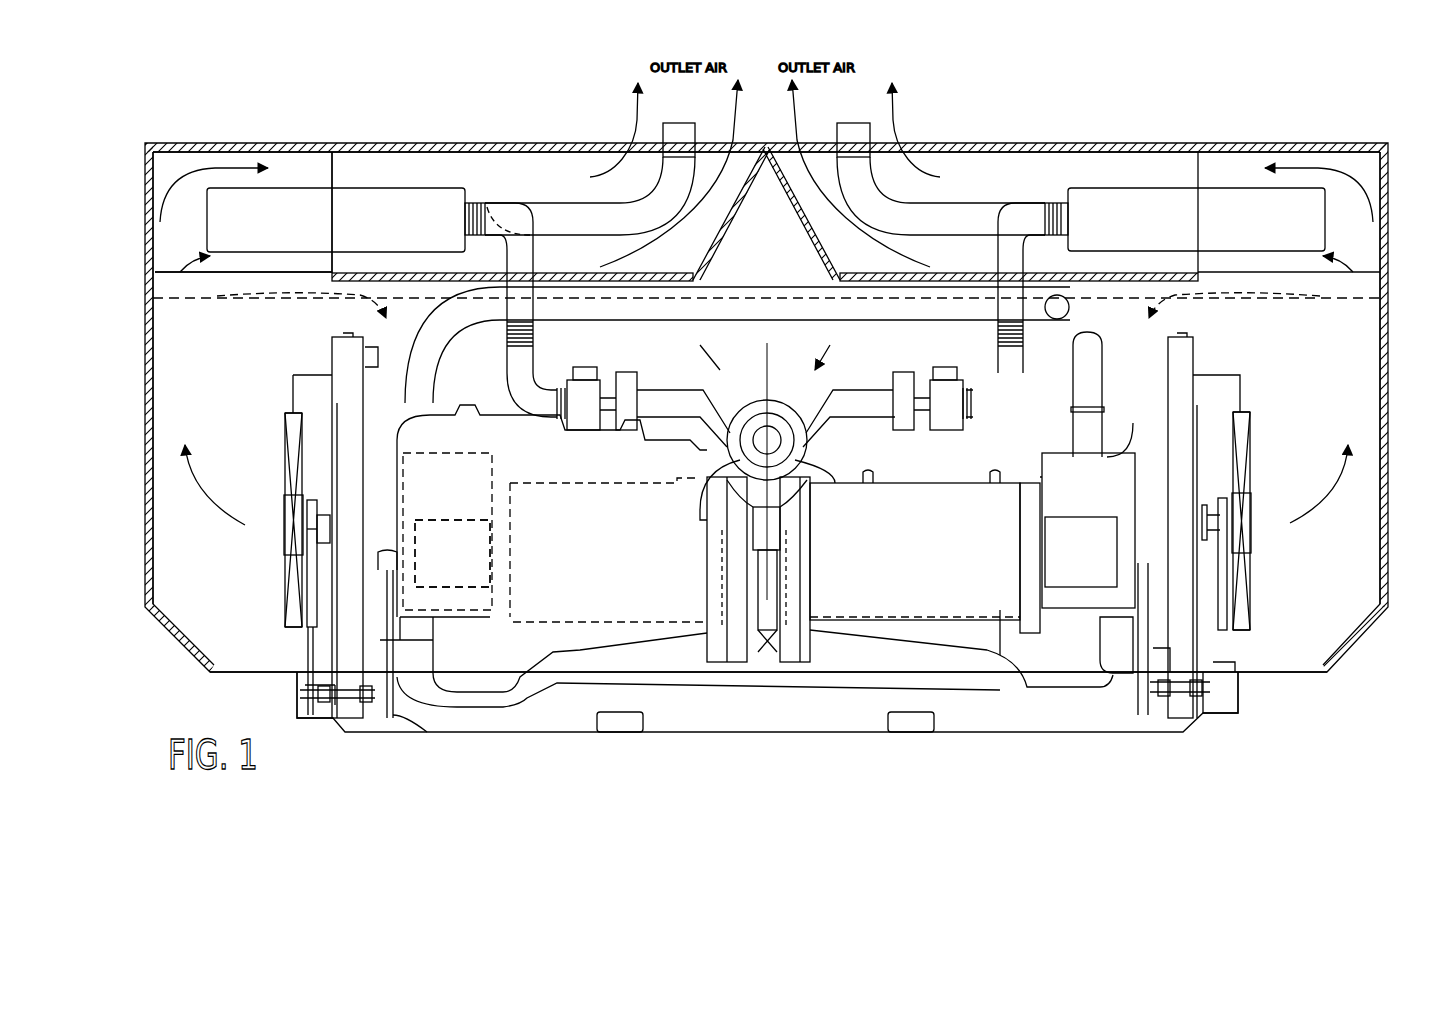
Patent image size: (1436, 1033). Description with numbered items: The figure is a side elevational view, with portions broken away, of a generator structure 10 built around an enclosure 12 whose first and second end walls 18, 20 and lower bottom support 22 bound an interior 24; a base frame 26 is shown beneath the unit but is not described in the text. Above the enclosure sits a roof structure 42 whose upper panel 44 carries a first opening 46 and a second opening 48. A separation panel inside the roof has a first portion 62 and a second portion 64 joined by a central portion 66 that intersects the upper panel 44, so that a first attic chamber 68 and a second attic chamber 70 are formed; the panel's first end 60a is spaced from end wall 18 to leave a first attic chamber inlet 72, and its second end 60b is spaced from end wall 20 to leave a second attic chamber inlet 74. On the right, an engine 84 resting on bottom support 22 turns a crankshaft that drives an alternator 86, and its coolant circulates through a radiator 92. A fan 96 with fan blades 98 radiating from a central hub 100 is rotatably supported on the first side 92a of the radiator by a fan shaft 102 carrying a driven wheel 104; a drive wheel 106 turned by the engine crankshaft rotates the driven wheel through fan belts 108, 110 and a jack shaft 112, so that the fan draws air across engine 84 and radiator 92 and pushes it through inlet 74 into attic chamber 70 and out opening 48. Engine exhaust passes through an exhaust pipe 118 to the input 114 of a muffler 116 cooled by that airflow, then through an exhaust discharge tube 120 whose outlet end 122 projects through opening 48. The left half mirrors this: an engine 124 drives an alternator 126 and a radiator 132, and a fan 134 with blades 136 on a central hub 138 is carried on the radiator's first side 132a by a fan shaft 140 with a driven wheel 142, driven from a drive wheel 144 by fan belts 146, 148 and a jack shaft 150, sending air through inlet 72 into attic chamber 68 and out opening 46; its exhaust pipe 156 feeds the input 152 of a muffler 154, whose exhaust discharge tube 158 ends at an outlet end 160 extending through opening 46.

The generator structure 10 is at (1288, 735).
The enclosure 12 is at (1410, 612).
The first end wall 18 is at (148, 400).
The second end wall 20 is at (1388, 415).
The lower bottom support 22 is at (1312, 678).
The interior 24 is at (420, 333).
The base frame 26 is at (702, 737).
The roof structure 42 is at (1212, 145).
The upper panel 44 is at (410, 143).
The first opening 46 is at (600, 142).
The second opening 48 is at (930, 142).
The first end of separation panel 60a is at (330, 252).
The second end of separation panel 60b is at (1190, 240).
The first portion of separation panel 62 is at (605, 285).
The second portion of separation panel 64 is at (1095, 288).
The central portion of separation panel 66 is at (805, 205).
The first attic chamber 68 is at (541, 188).
The second attic chamber 70 is at (1050, 185).
The first attic chamber inlet 72 is at (315, 272).
The second attic chamber inlet 74 is at (1203, 280).
The engine 84 is at (1123, 427).
The alternator 86 is at (620, 480).
The radiator 92 is at (1175, 372).
The first side of radiator 92a is at (1200, 402).
The fan 96 is at (1254, 608).
The fan blades 98 is at (1241, 415).
The central hub 100 is at (1243, 535).
The fan shaft 102 is at (1212, 515).
The driven wheel 104 is at (1228, 510).
The drive wheel 106 is at (1152, 527).
The fan belt 108 is at (1228, 678).
The fan belt 110 is at (1140, 690).
The jack shaft 112 is at (1178, 695).
The muffler input 114 is at (1060, 200).
The muffler 116 is at (1107, 187).
The exhaust pipe 118 is at (985, 388).
The exhaust discharge tube 120 is at (950, 210).
The outlet end 122 is at (857, 120).
The engine 124 is at (490, 670).
The alternator 126 is at (921, 580).
The radiator 132 is at (345, 365).
The first side of radiator 132a is at (320, 393).
The fan 134 is at (280, 572).
The fan blades 136 is at (287, 420).
The central hub 138 is at (283, 530).
The fan shaft 140 is at (318, 495).
The driven wheel 142 is at (322, 512).
The drive wheel 144 is at (392, 560).
The fan belt 146 is at (297, 685).
The fan belt 148 is at (395, 705).
The jack shaft 150 is at (352, 700).
The muffler input 152 is at (467, 190).
The muffler 154 is at (317, 186).
The exhaust pipe 156 is at (548, 390).
The exhaust discharge tube 158 is at (570, 215).
The outlet end 160 is at (672, 120).